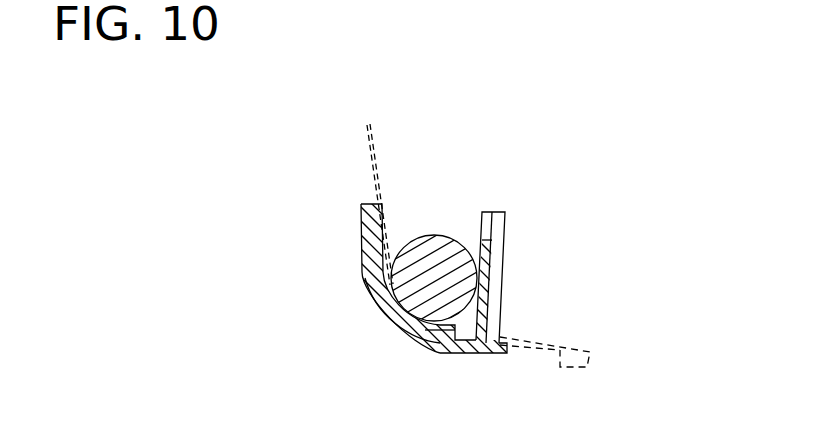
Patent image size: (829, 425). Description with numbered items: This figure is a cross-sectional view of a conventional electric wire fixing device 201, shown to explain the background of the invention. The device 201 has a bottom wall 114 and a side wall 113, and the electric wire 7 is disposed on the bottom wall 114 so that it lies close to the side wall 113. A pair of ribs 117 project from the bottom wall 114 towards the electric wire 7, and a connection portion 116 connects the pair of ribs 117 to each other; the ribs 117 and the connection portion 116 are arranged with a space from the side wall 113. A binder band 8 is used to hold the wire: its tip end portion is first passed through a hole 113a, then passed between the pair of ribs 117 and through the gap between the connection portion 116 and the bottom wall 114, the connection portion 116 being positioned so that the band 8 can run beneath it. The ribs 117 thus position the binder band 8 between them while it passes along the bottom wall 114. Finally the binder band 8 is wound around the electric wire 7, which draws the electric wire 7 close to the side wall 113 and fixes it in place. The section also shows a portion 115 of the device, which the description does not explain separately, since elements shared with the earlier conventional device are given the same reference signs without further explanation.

The electric wire fixing device 201 is at (515, 202).
The electric wire 7 is at (432, 262).
The side wall portion 115 is at (365, 262).
The bottom wall 114 is at (403, 340).
The side wall 113 is at (481, 258).
The hole 113a is at (487, 327).
The binder band 8 is at (547, 343).
The connection portion 116 is at (453, 336).
The ribs 117 is at (440, 343).